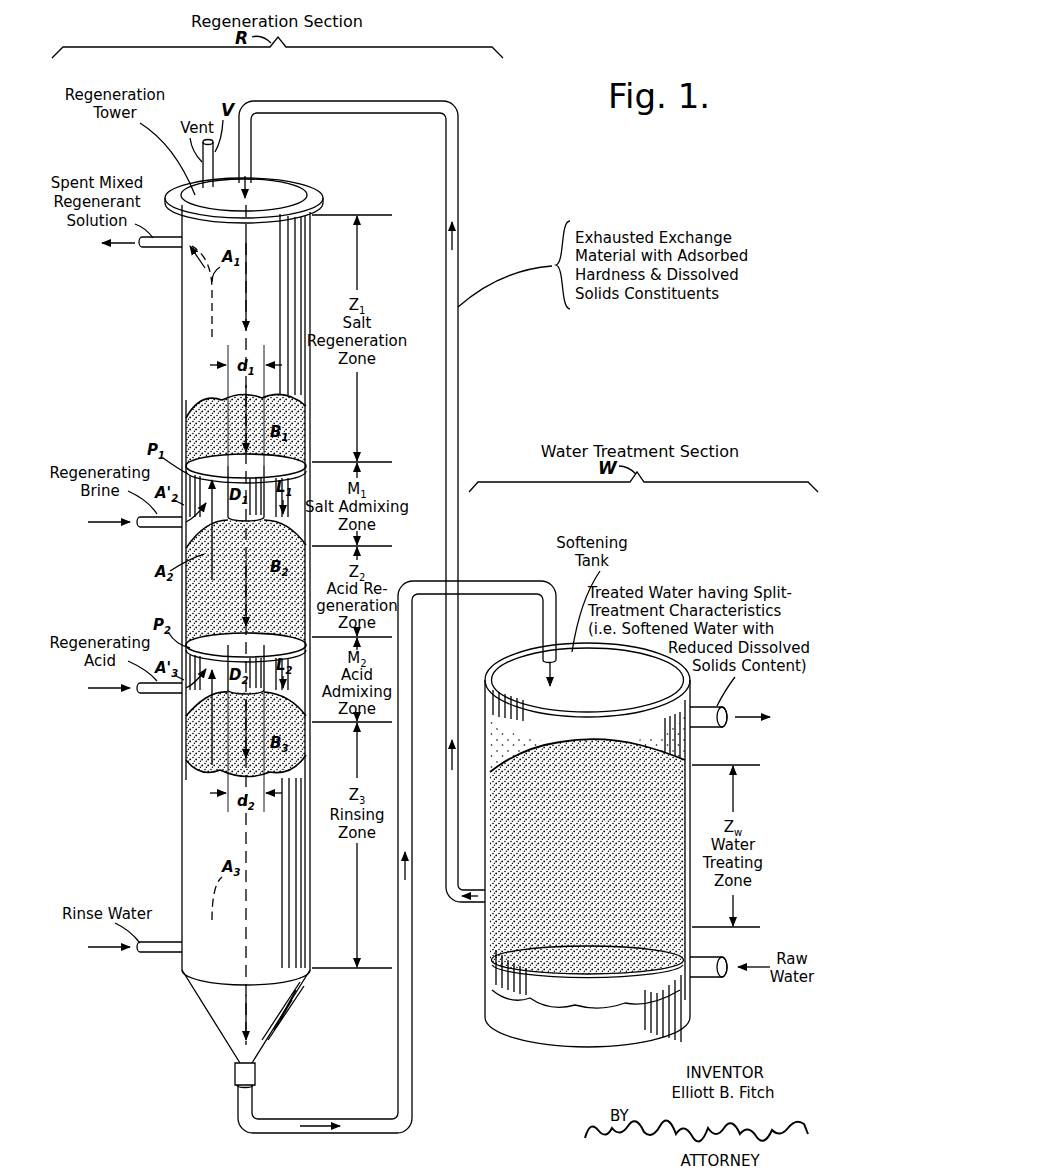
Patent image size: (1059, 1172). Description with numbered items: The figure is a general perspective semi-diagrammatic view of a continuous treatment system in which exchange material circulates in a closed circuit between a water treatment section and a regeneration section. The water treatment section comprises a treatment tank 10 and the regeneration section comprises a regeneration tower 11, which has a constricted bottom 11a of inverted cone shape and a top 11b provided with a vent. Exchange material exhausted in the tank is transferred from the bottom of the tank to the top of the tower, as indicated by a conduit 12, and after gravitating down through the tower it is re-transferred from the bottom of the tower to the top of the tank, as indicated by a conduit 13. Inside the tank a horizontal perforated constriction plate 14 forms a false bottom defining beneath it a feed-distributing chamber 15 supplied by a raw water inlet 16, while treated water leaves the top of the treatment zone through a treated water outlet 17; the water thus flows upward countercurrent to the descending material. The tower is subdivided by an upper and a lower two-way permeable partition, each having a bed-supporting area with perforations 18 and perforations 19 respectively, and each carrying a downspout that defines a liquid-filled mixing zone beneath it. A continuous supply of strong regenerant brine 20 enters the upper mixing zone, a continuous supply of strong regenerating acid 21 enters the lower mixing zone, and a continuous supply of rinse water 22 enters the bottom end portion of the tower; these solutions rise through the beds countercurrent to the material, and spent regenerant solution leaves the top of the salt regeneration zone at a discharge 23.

The treatment tank 10 is at (532, 652).
The regeneration tower 11 is at (181, 296).
The constricted bottom 11a is at (210, 1000).
The top 11b is at (268, 180).
The conduit 12 is at (458, 384).
The conduit 13 is at (411, 1023).
The constriction plate 14 is at (566, 966).
The feed-distributing chamber 15 is at (689, 958).
The raw water inlet 16 is at (712, 980).
The treated water outlet 17 is at (712, 729).
The perforations 18 is at (213, 448).
The perforations 19 is at (202, 630).
The supply of strong regenerant brine 20 is at (155, 529).
The supply of strong regenerating acid 21 is at (158, 696).
The supply of rinse water 22 is at (158, 955).
The discharge of spent regenerant solution 23 is at (158, 249).